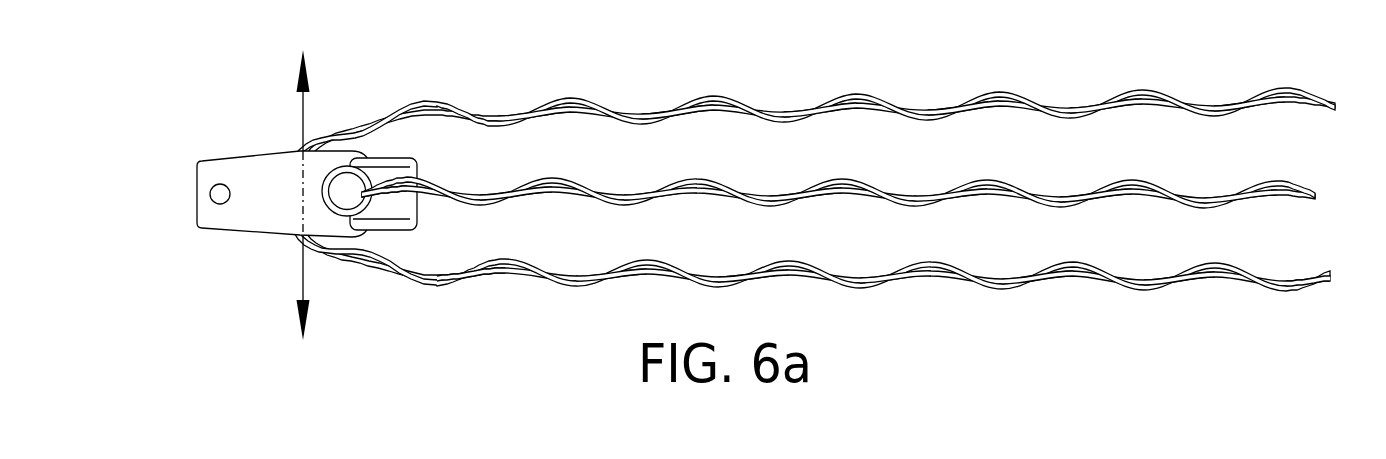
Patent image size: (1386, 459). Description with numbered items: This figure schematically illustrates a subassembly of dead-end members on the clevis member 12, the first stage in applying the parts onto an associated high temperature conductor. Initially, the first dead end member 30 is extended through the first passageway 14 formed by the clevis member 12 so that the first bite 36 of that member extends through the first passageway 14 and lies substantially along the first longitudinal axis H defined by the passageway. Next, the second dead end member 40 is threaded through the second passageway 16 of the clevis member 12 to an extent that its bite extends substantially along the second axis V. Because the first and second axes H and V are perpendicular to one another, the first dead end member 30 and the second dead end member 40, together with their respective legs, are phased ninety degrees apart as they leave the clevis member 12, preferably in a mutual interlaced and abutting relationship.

The clevis member 12 is at (243, 151).
The first passageway 14 is at (340, 190).
The second passageway 16 is at (295, 238).
The first dead end member 30 is at (483, 190).
The first bite 36 is at (362, 200).
The second dead end member 40 is at (632, 103).